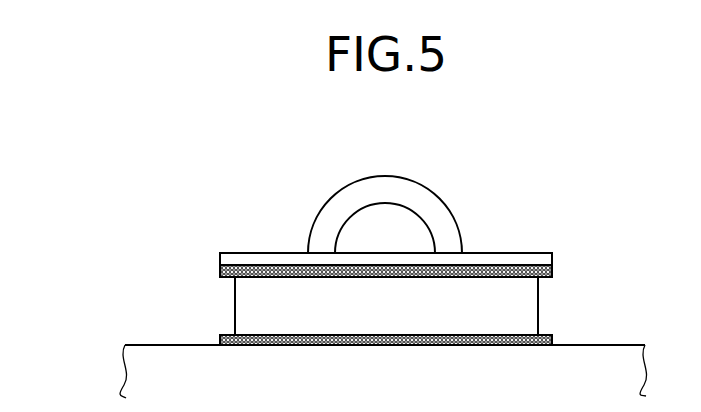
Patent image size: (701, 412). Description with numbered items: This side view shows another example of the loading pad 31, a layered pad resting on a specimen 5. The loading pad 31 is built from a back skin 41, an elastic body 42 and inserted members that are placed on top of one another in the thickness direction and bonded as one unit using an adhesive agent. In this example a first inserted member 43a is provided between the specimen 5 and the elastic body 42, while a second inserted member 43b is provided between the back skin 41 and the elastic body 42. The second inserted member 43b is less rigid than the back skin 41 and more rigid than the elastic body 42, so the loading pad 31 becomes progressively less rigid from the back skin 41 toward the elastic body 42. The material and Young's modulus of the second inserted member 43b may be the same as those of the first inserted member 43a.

The specimen 5 is at (607, 344).
The loading pad 31 is at (502, 199).
The back skin 41 is at (224, 251).
The elastic body 42 is at (235, 300).
The first inserted member 43a is at (220, 338).
The second inserted member 43b is at (220, 276).